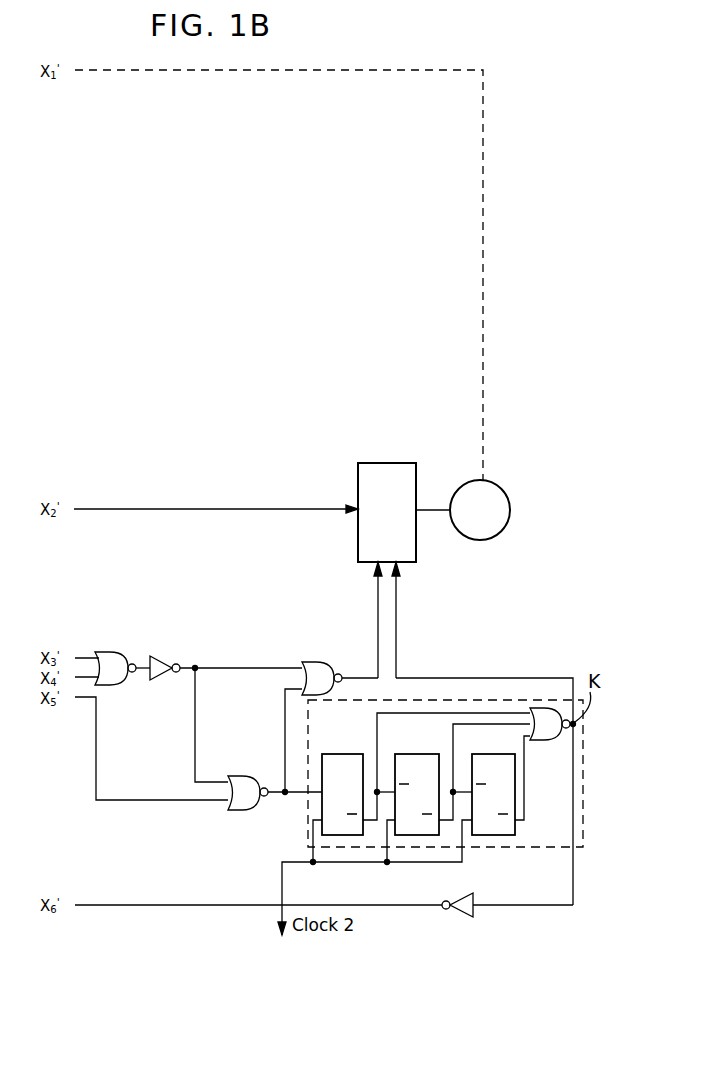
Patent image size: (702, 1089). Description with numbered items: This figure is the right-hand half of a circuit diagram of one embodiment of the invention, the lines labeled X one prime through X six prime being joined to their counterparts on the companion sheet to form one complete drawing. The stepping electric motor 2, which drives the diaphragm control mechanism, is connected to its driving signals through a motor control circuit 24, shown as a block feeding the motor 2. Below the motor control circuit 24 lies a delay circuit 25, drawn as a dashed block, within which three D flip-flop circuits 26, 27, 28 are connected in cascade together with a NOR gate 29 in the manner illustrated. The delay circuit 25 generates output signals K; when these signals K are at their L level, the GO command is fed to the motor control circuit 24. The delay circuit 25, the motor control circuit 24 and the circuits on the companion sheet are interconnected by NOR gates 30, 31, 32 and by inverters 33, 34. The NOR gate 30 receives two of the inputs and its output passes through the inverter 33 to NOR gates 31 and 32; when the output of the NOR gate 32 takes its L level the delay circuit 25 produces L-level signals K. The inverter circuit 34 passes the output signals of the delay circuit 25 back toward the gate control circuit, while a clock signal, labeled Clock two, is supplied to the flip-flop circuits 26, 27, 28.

The stepping electric motor 2 is at (498, 493).
The motor control circuit 24 is at (389, 470).
The delay circuit 25 is at (583, 812).
The D flip-flop circuit 26 is at (340, 757).
The D flip-flop circuit 27 is at (412, 757).
The D flip-flop circuit 28 is at (500, 748).
The NOR gate 29 is at (545, 742).
The NOR gate 30 is at (124, 655).
The NOR gate 31 is at (318, 664).
The NOR gate 32 is at (235, 778).
The inverter 33 is at (165, 661).
The inverter circuit 34 is at (470, 900).